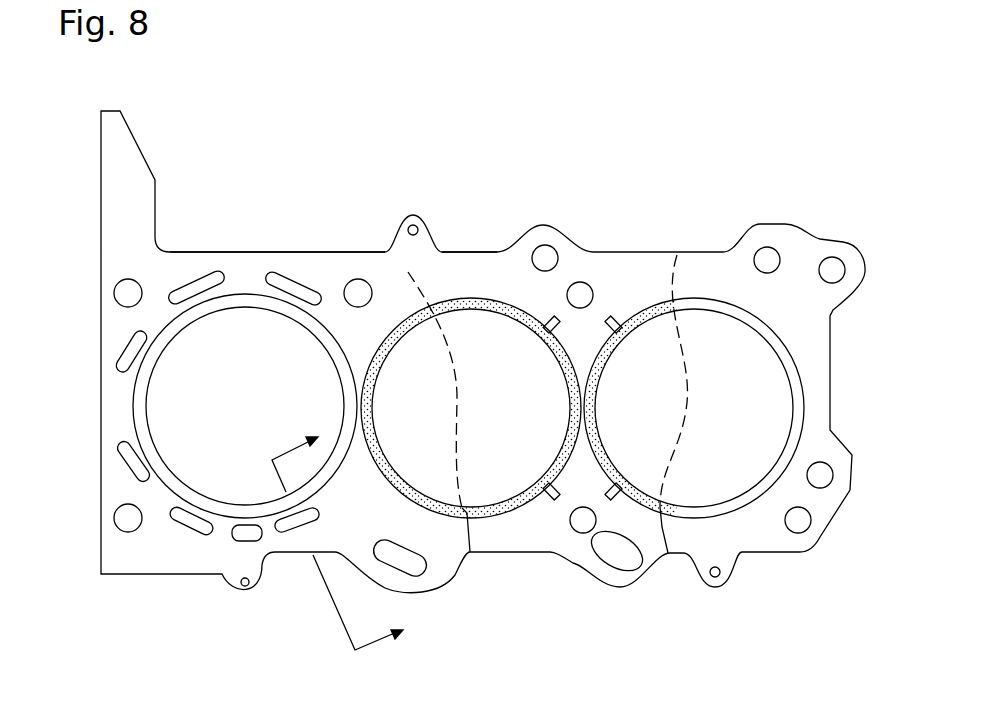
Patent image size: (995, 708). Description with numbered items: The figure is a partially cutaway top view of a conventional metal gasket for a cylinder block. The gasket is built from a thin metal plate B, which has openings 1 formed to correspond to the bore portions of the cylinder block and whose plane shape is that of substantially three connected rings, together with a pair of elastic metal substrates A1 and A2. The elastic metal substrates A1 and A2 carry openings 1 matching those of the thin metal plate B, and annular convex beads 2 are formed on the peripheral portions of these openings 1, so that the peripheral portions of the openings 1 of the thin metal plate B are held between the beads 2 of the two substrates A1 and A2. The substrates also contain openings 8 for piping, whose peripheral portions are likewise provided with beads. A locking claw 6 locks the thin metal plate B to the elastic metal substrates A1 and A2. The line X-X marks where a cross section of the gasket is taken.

The opening 1 is at (256, 410).
The annular convex bead 2 is at (470, 297).
The locking claw 6 is at (386, 306).
The opening for piping 8 is at (311, 520).
The elastic metal substrate A1 is at (272, 240).
The elastic metal substrate A2 is at (478, 240).
The thin metal plate B is at (527, 304).
The section line X- X is at (341, 541).